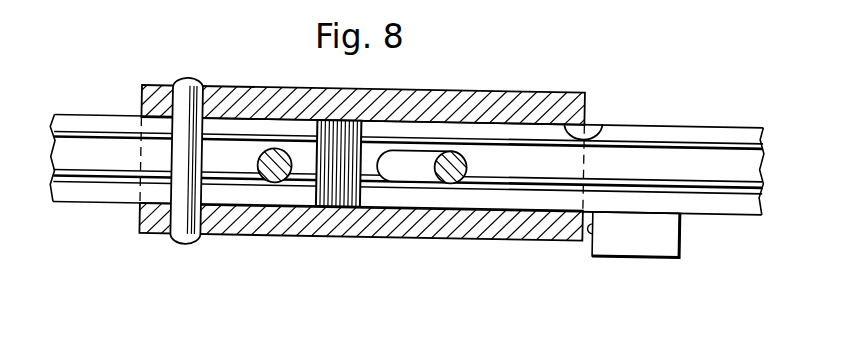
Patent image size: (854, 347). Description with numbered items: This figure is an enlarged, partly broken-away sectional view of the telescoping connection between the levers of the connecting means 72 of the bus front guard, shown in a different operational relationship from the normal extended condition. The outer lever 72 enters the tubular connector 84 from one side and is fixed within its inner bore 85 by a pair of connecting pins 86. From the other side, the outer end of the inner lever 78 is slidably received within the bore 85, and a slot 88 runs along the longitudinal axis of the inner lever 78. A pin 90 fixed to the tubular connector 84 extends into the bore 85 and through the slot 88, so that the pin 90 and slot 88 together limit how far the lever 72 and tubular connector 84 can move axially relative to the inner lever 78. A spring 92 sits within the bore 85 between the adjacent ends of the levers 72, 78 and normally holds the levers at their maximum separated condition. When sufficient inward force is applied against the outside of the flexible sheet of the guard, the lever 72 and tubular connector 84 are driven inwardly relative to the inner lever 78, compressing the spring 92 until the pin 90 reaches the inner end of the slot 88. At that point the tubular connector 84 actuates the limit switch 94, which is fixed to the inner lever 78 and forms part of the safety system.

The connecting means 72 is at (103, 192).
The inner lever 78 is at (700, 138).
The tubular connector 84 is at (557, 106).
The inner bore 85 is at (598, 128).
The connecting pins 86 is at (275, 148).
The slot 88 is at (410, 178).
The pin 90 is at (456, 184).
The spring 92 is at (330, 205).
The limit switch 94 is at (640, 238).